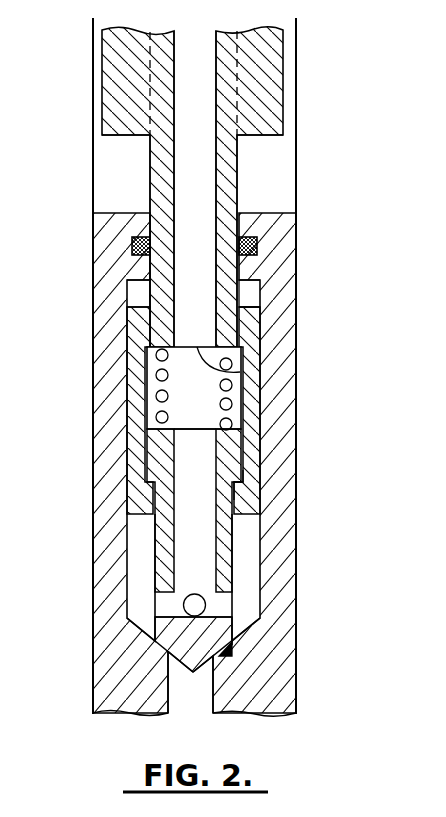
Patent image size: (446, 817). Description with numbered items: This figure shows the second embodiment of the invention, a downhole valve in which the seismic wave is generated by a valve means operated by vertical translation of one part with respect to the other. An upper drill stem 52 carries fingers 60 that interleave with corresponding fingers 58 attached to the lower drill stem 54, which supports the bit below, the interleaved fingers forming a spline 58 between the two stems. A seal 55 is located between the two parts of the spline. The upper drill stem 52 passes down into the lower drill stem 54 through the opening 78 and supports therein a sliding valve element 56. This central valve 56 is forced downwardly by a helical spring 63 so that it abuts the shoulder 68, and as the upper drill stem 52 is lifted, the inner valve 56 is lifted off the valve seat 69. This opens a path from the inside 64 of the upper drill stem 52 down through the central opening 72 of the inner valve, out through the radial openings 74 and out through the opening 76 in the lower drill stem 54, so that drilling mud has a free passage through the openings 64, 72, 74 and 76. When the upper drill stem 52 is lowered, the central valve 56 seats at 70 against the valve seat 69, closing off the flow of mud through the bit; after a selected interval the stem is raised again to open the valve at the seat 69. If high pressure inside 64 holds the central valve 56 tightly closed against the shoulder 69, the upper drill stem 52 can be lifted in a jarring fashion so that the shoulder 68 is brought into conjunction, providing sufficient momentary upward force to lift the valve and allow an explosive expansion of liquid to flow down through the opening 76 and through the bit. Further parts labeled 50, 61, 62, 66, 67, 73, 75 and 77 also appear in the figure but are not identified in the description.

The downhole tool 50 is at (342, 137).
The upper drill stem 52 is at (264, 79).
The lower drill stem 54 is at (266, 665).
The seal 55 is at (252, 243).
The sliding valve element 56 is at (255, 557).
The spline 58 is at (273, 176).
The fingers 60 is at (270, 120).
The shoulder 61 is at (262, 293).
The recess 62 is at (262, 302).
The helical spring 63 is at (147, 388).
The inside of the upper drill stem 64 is at (191, 46).
The ports 66 is at (237, 401).
The sleeve 67 is at (243, 450).
The shoulder 68 is at (238, 493).
The valve seat 69 is at (243, 632).
The seat 70 is at (194, 666).
The central opening 72 is at (133, 510).
The upper port 73 is at (240, 369).
The radial openings 74 is at (163, 604).
The valve chamber 75 is at (194, 428).
The opening 76 is at (188, 692).
The inner tube 77 is at (150, 157).
The opening 78 is at (158, 272).